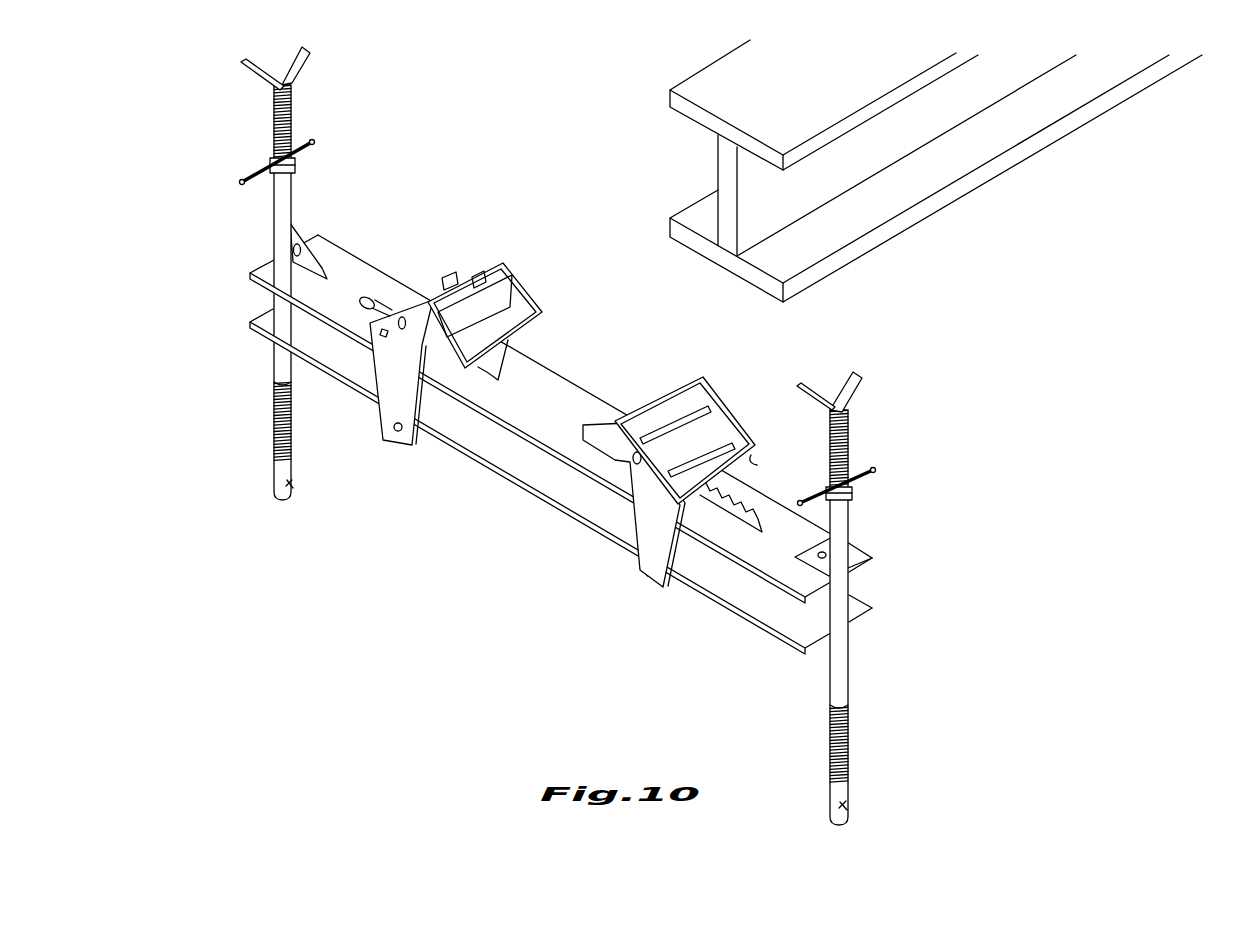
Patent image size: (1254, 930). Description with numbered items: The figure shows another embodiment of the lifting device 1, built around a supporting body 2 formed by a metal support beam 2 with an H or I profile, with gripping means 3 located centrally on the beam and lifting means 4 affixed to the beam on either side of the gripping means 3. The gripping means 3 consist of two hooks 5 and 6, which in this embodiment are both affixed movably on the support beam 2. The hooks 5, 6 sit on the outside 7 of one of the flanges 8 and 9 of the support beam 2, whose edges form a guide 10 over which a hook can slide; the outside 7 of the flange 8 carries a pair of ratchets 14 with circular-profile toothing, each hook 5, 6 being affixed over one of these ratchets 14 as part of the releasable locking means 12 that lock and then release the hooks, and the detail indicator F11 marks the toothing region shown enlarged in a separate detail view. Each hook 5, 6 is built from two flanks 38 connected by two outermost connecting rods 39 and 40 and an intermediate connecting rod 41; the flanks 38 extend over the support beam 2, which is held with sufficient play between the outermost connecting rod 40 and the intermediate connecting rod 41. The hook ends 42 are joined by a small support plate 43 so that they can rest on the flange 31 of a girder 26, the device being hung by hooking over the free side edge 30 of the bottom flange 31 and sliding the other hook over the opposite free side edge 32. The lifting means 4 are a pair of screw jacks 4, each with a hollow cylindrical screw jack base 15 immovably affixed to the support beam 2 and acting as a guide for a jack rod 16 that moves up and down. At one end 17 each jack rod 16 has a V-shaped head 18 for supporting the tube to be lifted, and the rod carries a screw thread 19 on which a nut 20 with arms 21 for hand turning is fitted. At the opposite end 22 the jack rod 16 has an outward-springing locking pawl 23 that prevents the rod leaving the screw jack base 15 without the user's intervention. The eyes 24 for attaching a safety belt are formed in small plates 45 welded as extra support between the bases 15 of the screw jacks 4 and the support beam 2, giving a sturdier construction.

The lifting device 1 is at (993, 358).
The support beam 2 is at (618, 337).
The gripping means 3 is at (530, 283).
The screw jacks 4 is at (177, 135).
The hook 5 is at (545, 298).
The movable hook 6 is at (693, 393).
The outside of the flange 7 is at (370, 273).
The flange 8 is at (358, 372).
The flange 9 is at (520, 490).
The guide 10 is at (368, 410).
The releasable locking means 12 is at (603, 452).
The ratchets 14 is at (342, 308).
The screw jack base 15 is at (282, 222).
The jack rod 16 is at (347, 108).
The end of the jack rod 17 is at (240, 82).
The V-shaped head 18 is at (297, 63).
The screw thread 19 is at (275, 138).
The nut 20 is at (294, 167).
The arms 21 is at (314, 143).
The end of the jack rod 22 is at (258, 432).
The locking pawl 23 is at (296, 486).
The eye 24 is at (340, 274).
The girder 26 is at (716, 166).
The free side edge 30 is at (699, 210).
The flange 31 is at (710, 250).
The free side edge 32 is at (893, 197).
The flanks 38 is at (490, 262).
The outermost connecting rod 39 is at (475, 270).
The outermost connecting rod 40 is at (398, 428).
The intermediate connecting rod 41 is at (390, 312).
The hook ends 42 is at (508, 367).
The small support plate 43 is at (548, 345).
The small plates 45 is at (826, 562).
The force direction F11 is at (458, 612).